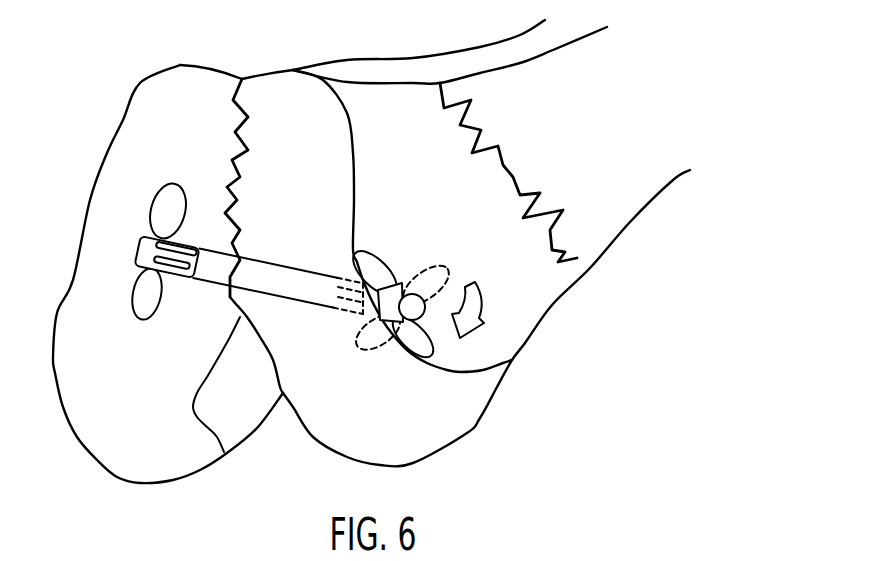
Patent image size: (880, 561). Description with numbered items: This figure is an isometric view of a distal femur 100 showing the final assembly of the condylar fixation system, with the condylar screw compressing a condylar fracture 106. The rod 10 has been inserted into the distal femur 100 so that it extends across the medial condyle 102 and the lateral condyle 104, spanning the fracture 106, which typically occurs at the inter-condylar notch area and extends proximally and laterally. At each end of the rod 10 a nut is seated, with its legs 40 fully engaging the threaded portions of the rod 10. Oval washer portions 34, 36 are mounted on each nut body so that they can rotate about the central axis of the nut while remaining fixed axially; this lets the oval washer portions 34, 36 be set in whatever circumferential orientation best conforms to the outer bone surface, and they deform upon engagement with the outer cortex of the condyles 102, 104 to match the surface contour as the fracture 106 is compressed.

The distal femur 100 is at (117, 89).
The medial condyle 102 is at (112, 483).
The lateral condyle 104 is at (445, 450).
The fracture 106 is at (240, 200).
The rod 10 is at (212, 270).
The legs 40 is at (200, 232).
The oval washer portion 36 is at (162, 207).
The oval washer portion 34 is at (140, 307).